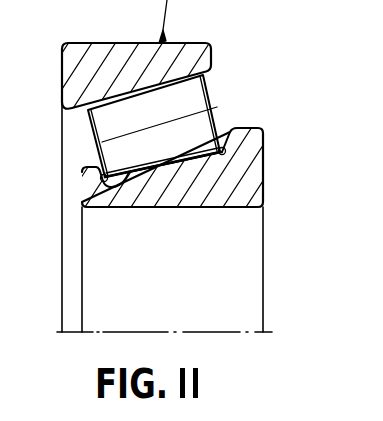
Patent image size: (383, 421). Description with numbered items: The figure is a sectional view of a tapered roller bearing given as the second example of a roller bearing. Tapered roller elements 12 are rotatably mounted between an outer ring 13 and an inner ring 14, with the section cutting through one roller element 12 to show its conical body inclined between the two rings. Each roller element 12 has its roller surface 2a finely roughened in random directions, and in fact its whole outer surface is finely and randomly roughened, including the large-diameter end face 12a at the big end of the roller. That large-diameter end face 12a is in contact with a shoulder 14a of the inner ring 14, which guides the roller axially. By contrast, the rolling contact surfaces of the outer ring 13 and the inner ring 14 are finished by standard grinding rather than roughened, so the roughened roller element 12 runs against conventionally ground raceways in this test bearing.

The outer ring 13 is at (92, 64).
The tapered roller element 12 is at (146, 111).
The large-diameter end face 12a is at (211, 98).
The inner ring 14 is at (177, 150).
The shoulder 14a is at (223, 133).
The roller surface 2a is at (88, 181).